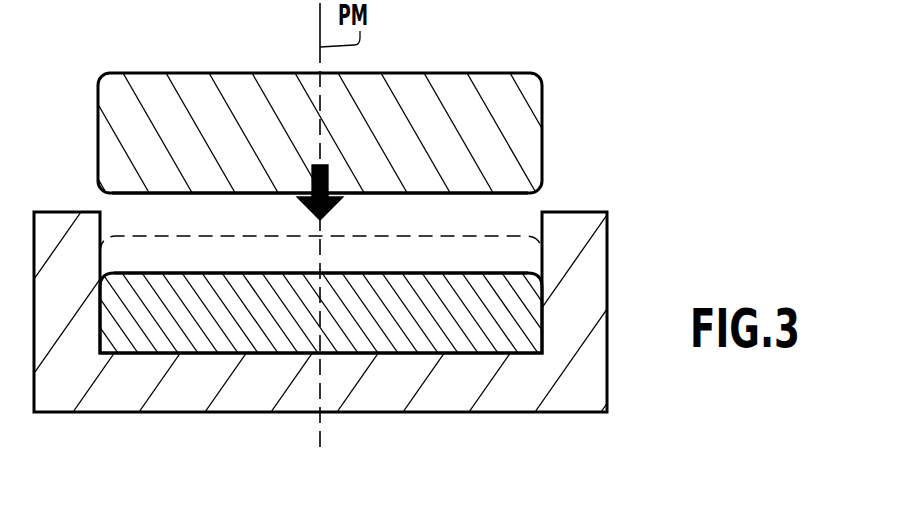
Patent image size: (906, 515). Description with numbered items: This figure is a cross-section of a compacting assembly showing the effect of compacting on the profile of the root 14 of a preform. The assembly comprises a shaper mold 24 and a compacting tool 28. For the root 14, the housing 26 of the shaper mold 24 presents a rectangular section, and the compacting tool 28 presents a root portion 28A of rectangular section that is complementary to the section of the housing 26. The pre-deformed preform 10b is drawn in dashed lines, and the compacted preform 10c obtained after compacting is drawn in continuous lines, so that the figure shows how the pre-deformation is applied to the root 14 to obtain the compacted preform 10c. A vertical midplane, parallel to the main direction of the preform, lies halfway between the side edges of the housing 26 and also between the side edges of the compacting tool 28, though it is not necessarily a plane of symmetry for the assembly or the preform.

The compacting tool 28 is at (502, 65).
The root portion 28A is at (487, 100).
The housing 26 is at (473, 222).
The shaper mold 24 is at (576, 238).
The root 14 is at (380, 300).
The pre-deformed preform 10b is at (306, 234).
The compacted preform 10c is at (200, 272).